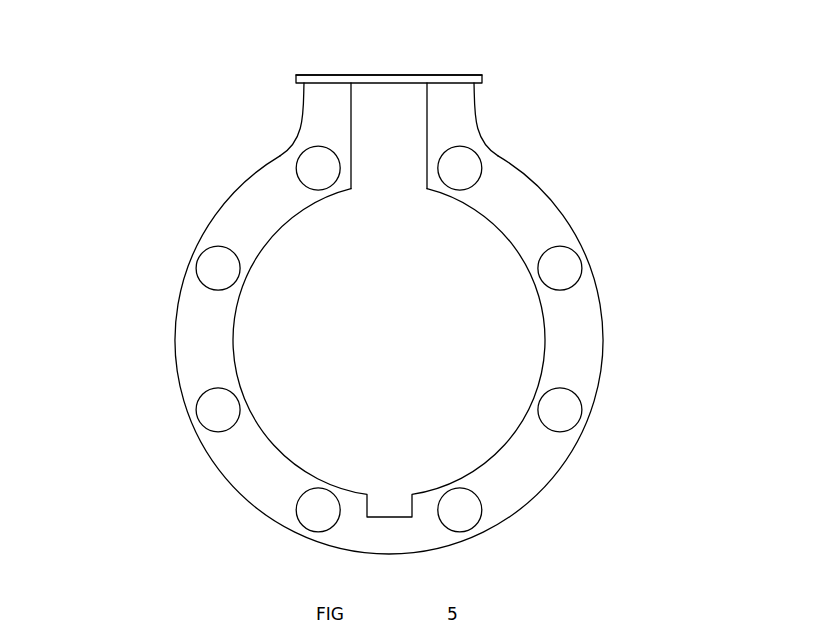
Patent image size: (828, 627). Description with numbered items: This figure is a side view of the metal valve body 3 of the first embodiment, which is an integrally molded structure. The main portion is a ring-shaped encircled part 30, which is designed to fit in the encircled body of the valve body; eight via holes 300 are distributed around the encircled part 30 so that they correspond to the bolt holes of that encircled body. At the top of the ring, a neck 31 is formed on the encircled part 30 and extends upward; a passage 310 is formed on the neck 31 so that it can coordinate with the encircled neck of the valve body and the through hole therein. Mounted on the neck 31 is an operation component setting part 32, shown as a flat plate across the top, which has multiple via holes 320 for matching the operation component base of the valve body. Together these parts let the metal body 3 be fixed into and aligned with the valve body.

The metal valve body 3 is at (368, 292).
The encircled part 30 is at (588, 332).
The via holes 300 is at (218, 267).
The neck 31 is at (440, 117).
The passage 310 is at (390, 110).
The operation component setting part 32 is at (457, 73).
The via holes 320 is at (385, 75).